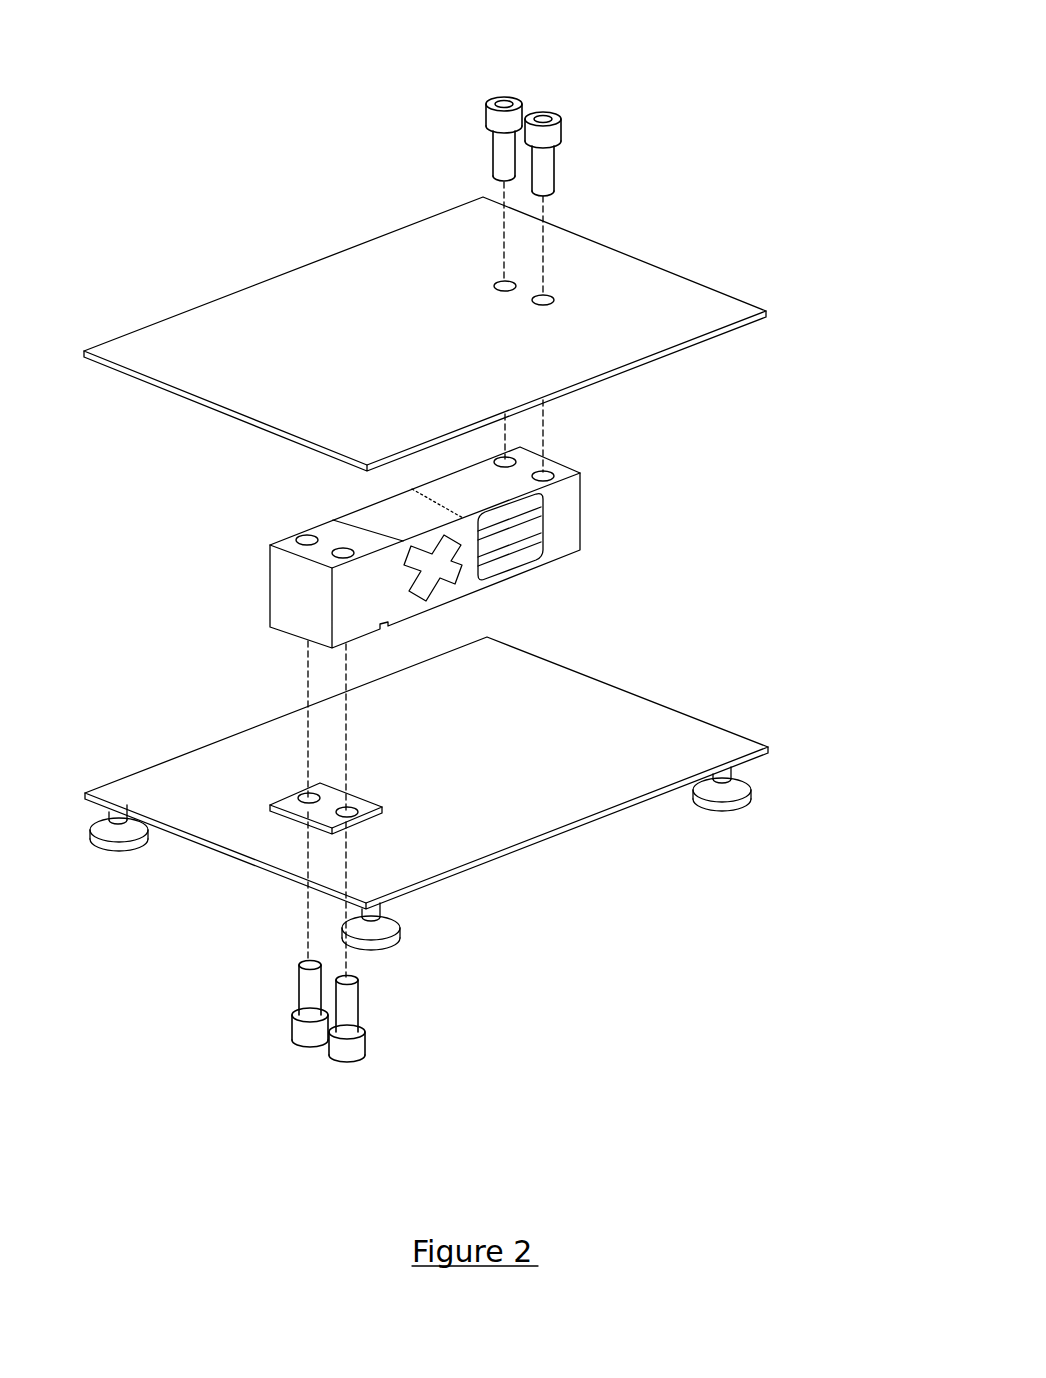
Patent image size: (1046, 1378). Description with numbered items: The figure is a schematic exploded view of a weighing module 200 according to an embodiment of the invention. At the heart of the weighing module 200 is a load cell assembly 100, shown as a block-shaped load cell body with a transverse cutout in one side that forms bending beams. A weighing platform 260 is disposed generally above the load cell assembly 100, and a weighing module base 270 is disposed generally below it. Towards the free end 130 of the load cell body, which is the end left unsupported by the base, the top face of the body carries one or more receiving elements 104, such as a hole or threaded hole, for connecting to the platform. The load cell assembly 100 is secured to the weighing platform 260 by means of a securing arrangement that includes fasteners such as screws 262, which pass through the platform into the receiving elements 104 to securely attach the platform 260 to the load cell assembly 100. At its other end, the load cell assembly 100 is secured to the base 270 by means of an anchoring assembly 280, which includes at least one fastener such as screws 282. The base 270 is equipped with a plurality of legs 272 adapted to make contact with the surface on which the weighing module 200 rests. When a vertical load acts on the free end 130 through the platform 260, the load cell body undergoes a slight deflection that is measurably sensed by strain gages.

The load cell assembly 100 is at (240, 656).
The receiving element 104 is at (552, 471).
The free end 130 is at (554, 524).
The weighing module 200 is at (145, 1083).
The weighing platform 260 is at (634, 285).
The screws 262 is at (520, 88).
The weighing module base 270 is at (643, 750).
The legs 272 is at (385, 937).
The anchoring assembly 280 is at (305, 822).
The screws 282 is at (312, 1033).